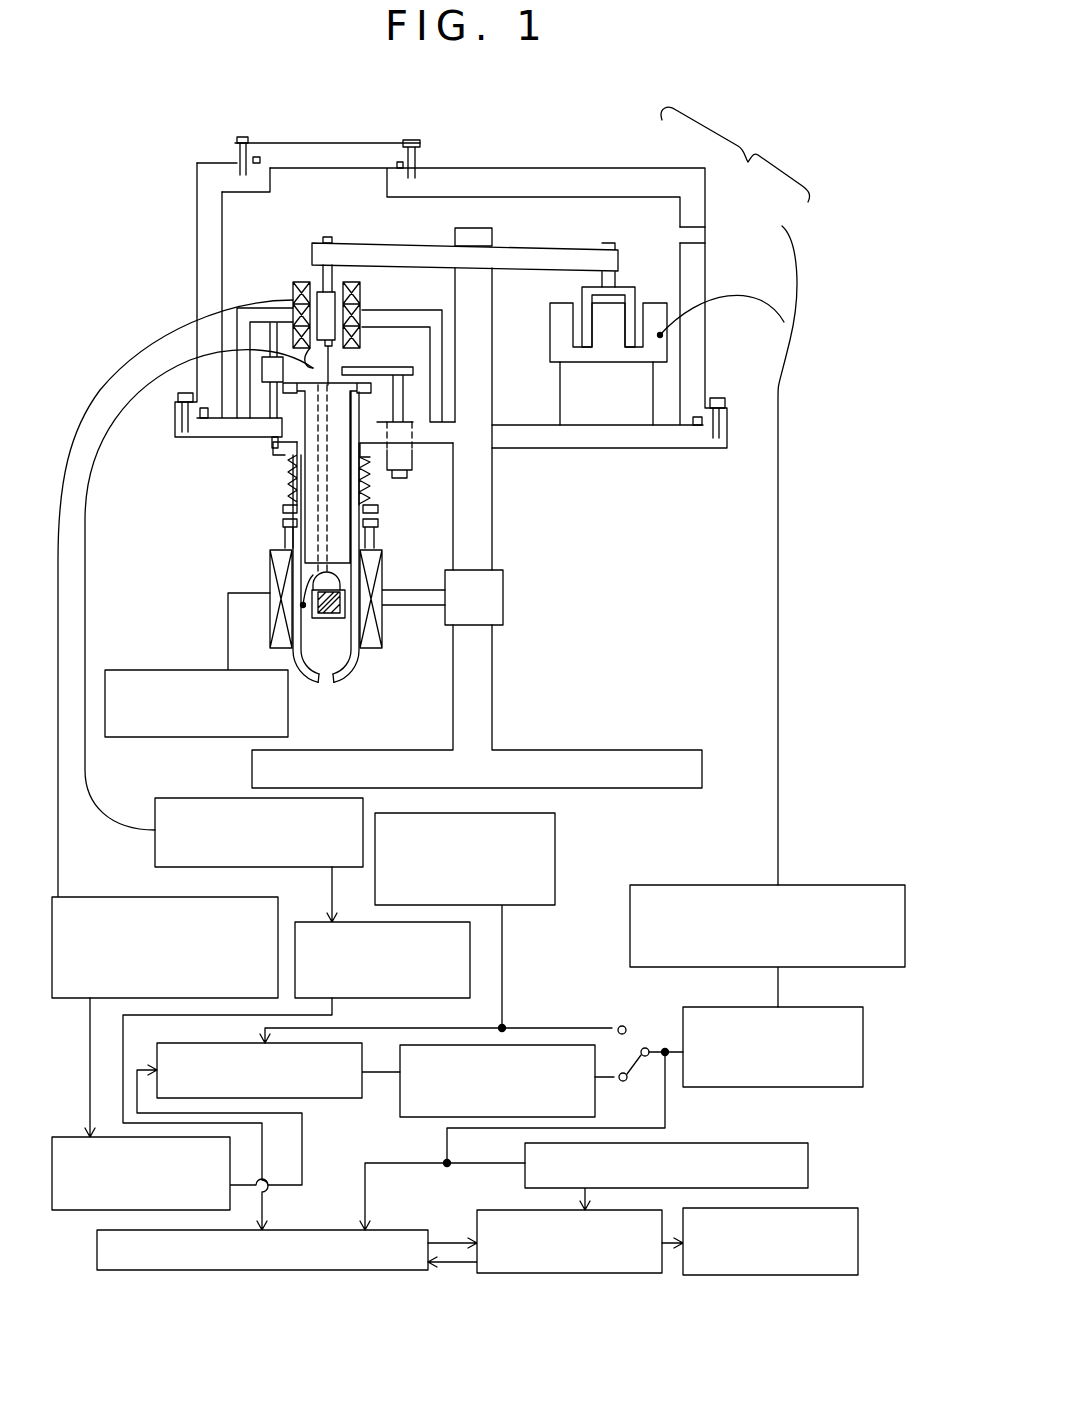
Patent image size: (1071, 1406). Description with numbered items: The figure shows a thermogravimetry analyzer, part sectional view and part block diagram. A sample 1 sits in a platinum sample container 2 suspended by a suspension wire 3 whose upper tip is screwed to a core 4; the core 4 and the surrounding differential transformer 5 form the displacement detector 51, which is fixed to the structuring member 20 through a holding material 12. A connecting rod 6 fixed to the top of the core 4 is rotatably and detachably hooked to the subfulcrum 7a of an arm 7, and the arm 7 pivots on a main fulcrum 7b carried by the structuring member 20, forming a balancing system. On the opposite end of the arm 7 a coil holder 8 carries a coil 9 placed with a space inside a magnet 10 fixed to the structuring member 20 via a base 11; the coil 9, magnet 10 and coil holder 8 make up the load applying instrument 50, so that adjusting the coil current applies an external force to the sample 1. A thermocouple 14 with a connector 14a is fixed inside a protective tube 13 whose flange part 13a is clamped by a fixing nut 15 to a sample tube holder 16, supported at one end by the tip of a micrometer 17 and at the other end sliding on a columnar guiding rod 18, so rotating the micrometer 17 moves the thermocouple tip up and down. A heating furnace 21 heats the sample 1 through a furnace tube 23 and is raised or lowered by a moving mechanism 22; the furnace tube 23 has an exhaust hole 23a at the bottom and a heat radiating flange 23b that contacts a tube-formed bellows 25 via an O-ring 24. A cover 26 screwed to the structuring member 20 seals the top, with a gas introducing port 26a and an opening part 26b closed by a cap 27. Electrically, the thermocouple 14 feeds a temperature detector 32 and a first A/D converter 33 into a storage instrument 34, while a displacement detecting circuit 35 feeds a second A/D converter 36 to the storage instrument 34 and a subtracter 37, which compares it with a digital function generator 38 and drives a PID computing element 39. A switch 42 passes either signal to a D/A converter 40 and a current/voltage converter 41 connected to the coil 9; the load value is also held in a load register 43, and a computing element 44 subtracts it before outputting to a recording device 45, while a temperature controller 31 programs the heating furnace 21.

The sample 1 is at (347, 607).
The sample container 2 is at (328, 618).
The suspension wire 3 is at (345, 578).
The core 4 is at (336, 278).
The differential transformer 5 is at (290, 288).
The connecting rod 6 is at (317, 278).
The arm 7 is at (383, 250).
The subfulcrum 7a is at (327, 253).
The main fulcrum 7b is at (472, 258).
The coil holder 8 is at (631, 294).
The coil 9 is at (640, 300).
The magnet 10 is at (728, 540).
The base 11 is at (560, 395).
The holding material 12 is at (237, 322).
The protective tube 13 is at (303, 540).
The flange part 13a is at (375, 412).
The thermocouple 14 is at (313, 575).
The connector 14a is at (283, 340).
The fixing nut 15 is at (287, 410).
The sample tube holder 16 is at (362, 368).
The micrometer 17 is at (413, 463).
The columnar guiding rod 18 is at (190, 358).
The structuring member 20 is at (492, 693).
The heating furnace 21 is at (381, 607).
The moving mechanism 22 is at (503, 602).
The furnace tube 23 is at (358, 673).
The exhaust hole 23a is at (330, 683).
The heat radiating flange 23b is at (378, 524).
The O-ring 24 is at (420, 163).
The tube-formed bellows 25 is at (377, 488).
The cover 26 is at (537, 173).
The gas introducing port 26a is at (706, 240).
The opening part 26b is at (307, 182).
The cap 27 is at (348, 157).
The temperature controller 31 is at (212, 668).
The temperature detector 32 is at (192, 798).
The first A/D converter 33 is at (312, 920).
The storage instrument 34 is at (407, 1230).
The displacement detecting circuit 35 is at (133, 897).
The second A/D converter 36 is at (72, 1137).
The subtracter 37 is at (338, 1100).
The digital function generator 38 is at (556, 845).
The PID computing element 39 is at (435, 1117).
The D/A converter 40 is at (845, 1007).
The current/voltage converter 41 is at (870, 885).
The switch 42 is at (645, 1047).
The load register 43 is at (797, 1145).
The computing element 44 is at (507, 1210).
The recording device 45 is at (823, 1208).
The load applying instrument 50 is at (776, 128).
The sample tube 51 is at (440, 305).